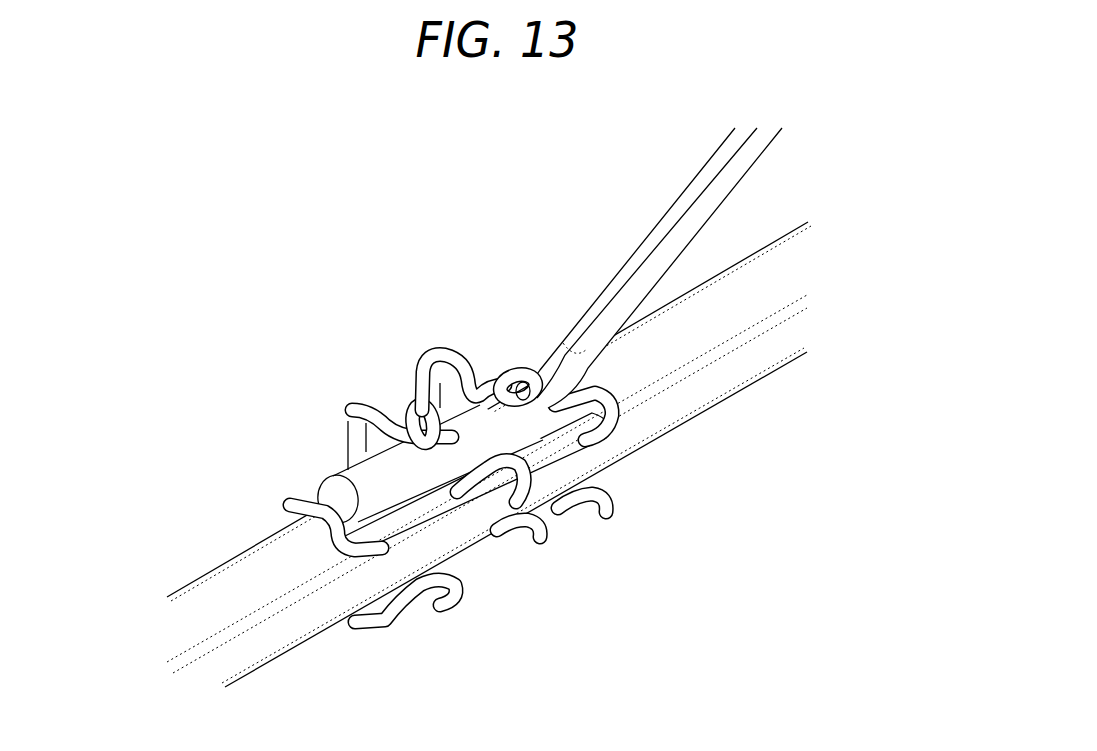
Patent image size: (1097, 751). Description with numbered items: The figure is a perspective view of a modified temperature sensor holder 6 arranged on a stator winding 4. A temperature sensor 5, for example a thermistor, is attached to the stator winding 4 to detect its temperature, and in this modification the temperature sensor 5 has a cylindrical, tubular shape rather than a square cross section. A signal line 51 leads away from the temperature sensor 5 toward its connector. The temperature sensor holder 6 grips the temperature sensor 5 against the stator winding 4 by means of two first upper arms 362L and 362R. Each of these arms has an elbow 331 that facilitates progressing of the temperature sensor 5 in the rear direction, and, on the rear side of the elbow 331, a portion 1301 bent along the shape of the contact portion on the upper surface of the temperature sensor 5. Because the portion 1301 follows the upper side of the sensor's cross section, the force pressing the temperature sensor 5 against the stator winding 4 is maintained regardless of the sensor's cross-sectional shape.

The stator winding 4 is at (685, 403).
The temperature sensor 5 is at (368, 488).
The temperature sensor holder 6 is at (567, 442).
The signal line 51 is at (640, 243).
The elbow 331 is at (423, 450).
The first upper arm 362L is at (382, 420).
The first upper arm 362R is at (510, 392).
The portion bent along the shape of the contact portion 1301 is at (457, 410).